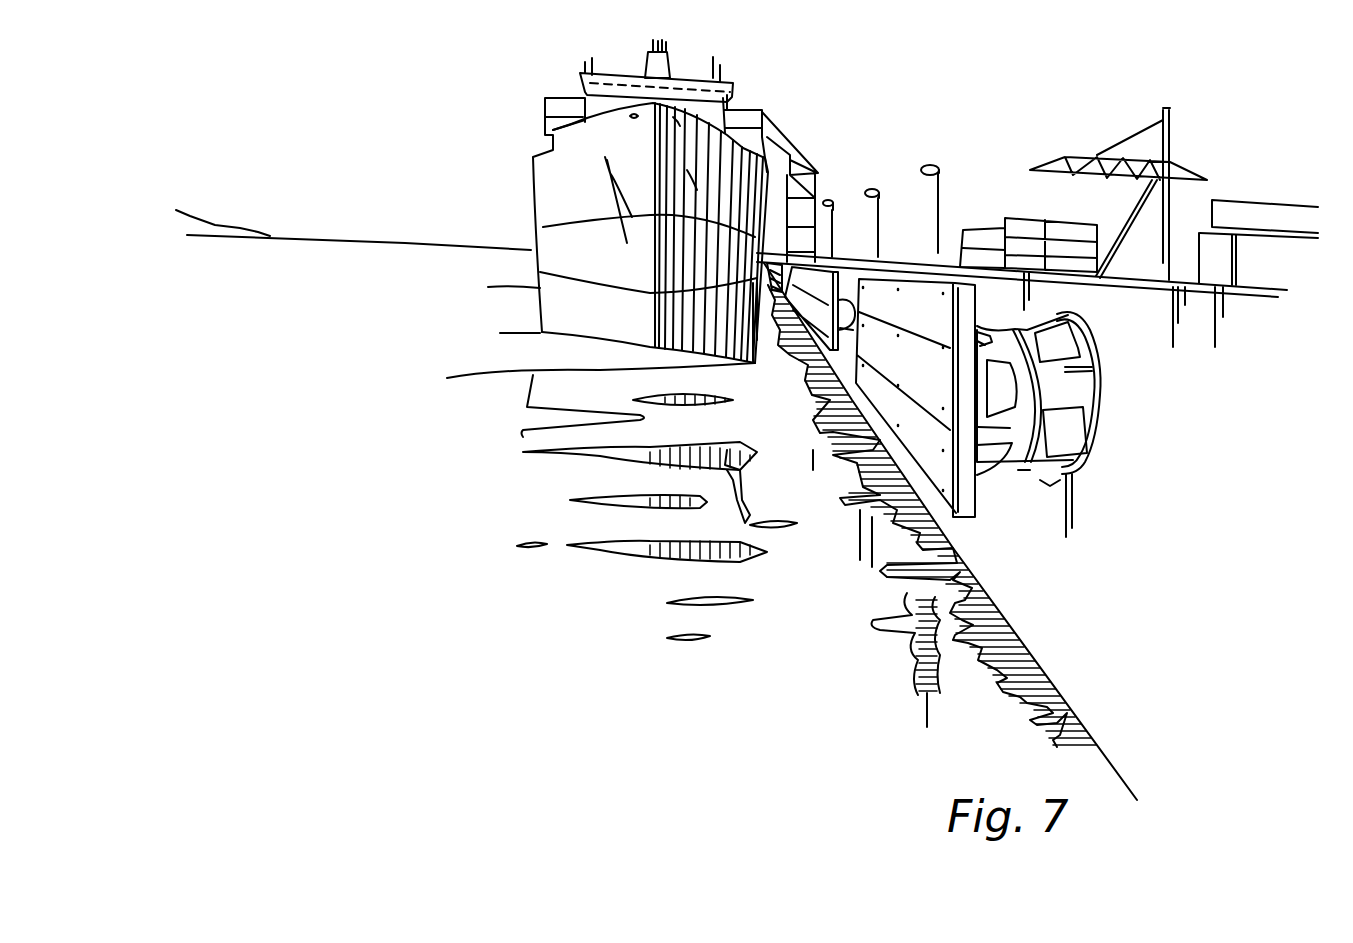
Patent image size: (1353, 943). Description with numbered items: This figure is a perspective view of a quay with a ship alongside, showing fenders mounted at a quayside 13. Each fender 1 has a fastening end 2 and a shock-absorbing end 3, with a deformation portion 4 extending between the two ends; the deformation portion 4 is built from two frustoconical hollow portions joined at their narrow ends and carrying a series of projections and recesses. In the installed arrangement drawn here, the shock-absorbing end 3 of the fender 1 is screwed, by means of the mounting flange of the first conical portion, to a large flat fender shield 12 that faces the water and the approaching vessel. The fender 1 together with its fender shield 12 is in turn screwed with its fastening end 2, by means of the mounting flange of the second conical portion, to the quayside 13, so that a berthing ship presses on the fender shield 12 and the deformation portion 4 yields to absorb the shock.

The fender 1 is at (1058, 507).
The fastening end 2 is at (1100, 346).
The shock-absorbing end 3 is at (977, 311).
The deformation portion 4 is at (1029, 489).
The fender shield 12 is at (943, 460).
The quayside 13 is at (1177, 432).